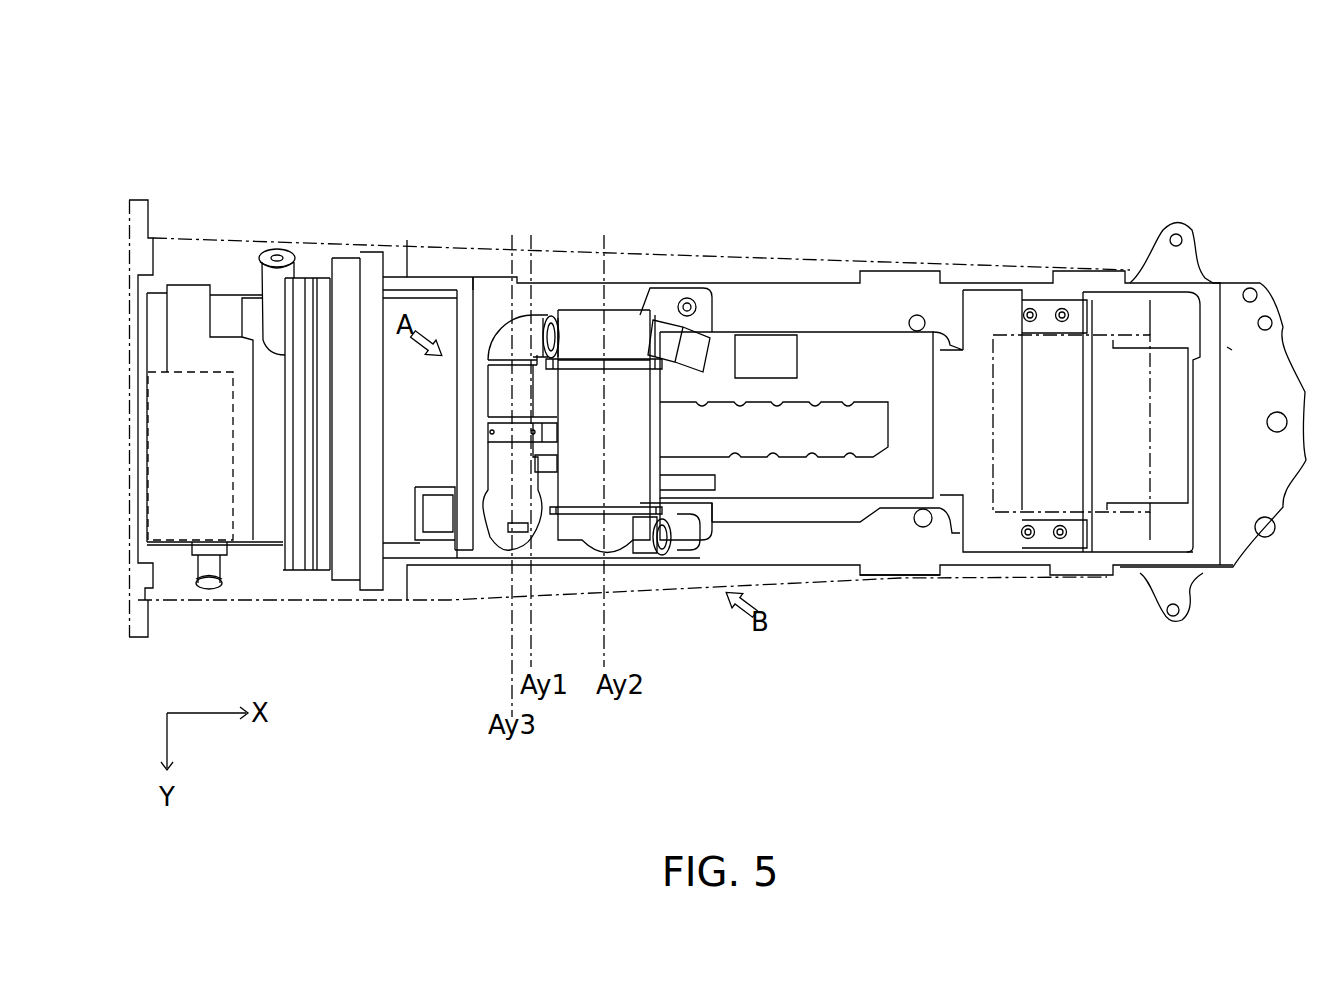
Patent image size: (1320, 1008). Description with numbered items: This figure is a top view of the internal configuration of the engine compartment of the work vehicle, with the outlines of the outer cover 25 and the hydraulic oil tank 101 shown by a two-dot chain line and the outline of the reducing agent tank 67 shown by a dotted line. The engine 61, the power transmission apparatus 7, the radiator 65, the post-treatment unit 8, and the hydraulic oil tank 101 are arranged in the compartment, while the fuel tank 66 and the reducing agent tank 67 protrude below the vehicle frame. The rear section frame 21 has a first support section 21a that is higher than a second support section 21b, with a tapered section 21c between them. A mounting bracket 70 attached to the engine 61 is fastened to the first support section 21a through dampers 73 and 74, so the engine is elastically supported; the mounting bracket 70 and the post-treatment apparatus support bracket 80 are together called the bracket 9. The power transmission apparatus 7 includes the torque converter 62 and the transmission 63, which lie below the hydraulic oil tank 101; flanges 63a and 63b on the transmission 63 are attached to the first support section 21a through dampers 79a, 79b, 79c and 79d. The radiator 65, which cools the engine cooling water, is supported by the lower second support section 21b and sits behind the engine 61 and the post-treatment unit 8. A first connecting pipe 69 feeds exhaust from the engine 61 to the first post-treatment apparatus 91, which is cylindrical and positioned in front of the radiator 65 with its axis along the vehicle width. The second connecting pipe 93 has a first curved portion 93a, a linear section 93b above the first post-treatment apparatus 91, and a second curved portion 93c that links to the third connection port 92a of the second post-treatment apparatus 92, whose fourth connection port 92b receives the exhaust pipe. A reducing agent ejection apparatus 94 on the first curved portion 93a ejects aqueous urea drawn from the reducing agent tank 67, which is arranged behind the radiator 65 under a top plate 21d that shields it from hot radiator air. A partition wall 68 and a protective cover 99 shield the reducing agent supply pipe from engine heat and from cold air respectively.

The power transmission apparatus 7 is at (1147, 170).
The post-treatment unit 8 is at (460, 115).
The bracket 9 is at (722, 548).
The rear section frame 21 is at (1198, 602).
The first support section 21a is at (905, 302).
The second support section 21b is at (312, 253).
The tapered section 21c is at (418, 284).
The top plate 21d is at (183, 327).
The outer cover 25 is at (820, 583).
The engine 61 is at (813, 417).
The torque converter 62 is at (980, 433).
The transmission 63 is at (1146, 443).
The flange 63a is at (1085, 535).
The flange 63b is at (1128, 350).
The radiator 65 is at (367, 572).
The fuel tank 66 is at (393, 523).
The reducing agent tank 67 is at (165, 550).
The partition wall 68 is at (465, 542).
The first connecting pipe 69 is at (818, 335).
The mounting bracket 70 is at (723, 350).
The damper 73 is at (697, 552).
The damper 74 is at (697, 303).
The damper 79a is at (1063, 545).
The damper 79b is at (1032, 540).
The damper 79c is at (1060, 330).
The damper 79d is at (1030, 322).
The post-treatment apparatus support bracket 80 is at (710, 308).
The first post-treatment apparatus 91 is at (560, 318).
The second post-treatment apparatus 92 is at (638, 338).
The third connection port 92a is at (587, 330).
The fourth connection port 92b is at (652, 365).
The second connecting pipe 93 is at (395, 160).
The first curved portion 93a is at (498, 400).
The linear section 93b is at (507, 340).
The second curved portion 93c is at (545, 400).
The reducing agent ejection apparatus 94 is at (553, 332).
The protective cover 99 is at (437, 525).
The hydraulic oil tank 101 is at (1150, 547).